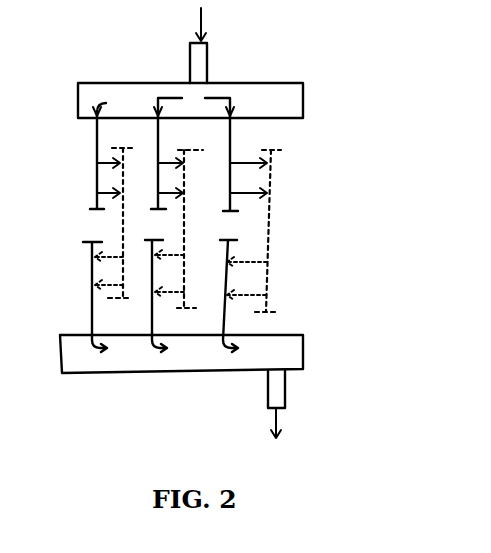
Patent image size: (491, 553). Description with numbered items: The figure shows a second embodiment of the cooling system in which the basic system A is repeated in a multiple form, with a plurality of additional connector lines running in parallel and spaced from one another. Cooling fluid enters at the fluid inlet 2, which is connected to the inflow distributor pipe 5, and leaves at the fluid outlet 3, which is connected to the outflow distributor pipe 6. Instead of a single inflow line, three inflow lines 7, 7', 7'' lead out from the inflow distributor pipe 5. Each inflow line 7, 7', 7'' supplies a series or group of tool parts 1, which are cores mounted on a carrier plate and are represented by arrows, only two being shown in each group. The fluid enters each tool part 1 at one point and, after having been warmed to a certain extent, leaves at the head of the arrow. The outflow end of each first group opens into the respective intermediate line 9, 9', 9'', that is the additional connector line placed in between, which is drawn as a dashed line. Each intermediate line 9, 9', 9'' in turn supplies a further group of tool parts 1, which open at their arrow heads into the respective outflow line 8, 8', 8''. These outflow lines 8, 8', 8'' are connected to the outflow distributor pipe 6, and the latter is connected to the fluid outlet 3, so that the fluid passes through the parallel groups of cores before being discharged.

The tool parts 1 is at (250, 258).
The fluid inlet 2 is at (203, 24).
The fluid outlet 3 is at (277, 416).
The inflow distributor pipe 5 is at (275, 92).
The outflow distributor pipe 6 is at (76, 353).
The inflow line 7 is at (74, 156).
The inflow line 7' is at (172, 153).
The inflow line 7'' is at (246, 154).
The outflow line 8 is at (67, 297).
The outflow line 8' is at (146, 296).
The outflow line 8'' is at (217, 296).
The intermediate line 9 is at (124, 223).
The intermediate line 9' is at (185, 229).
The intermediate line 9'' is at (277, 231).
The basic system A is at (350, 361).